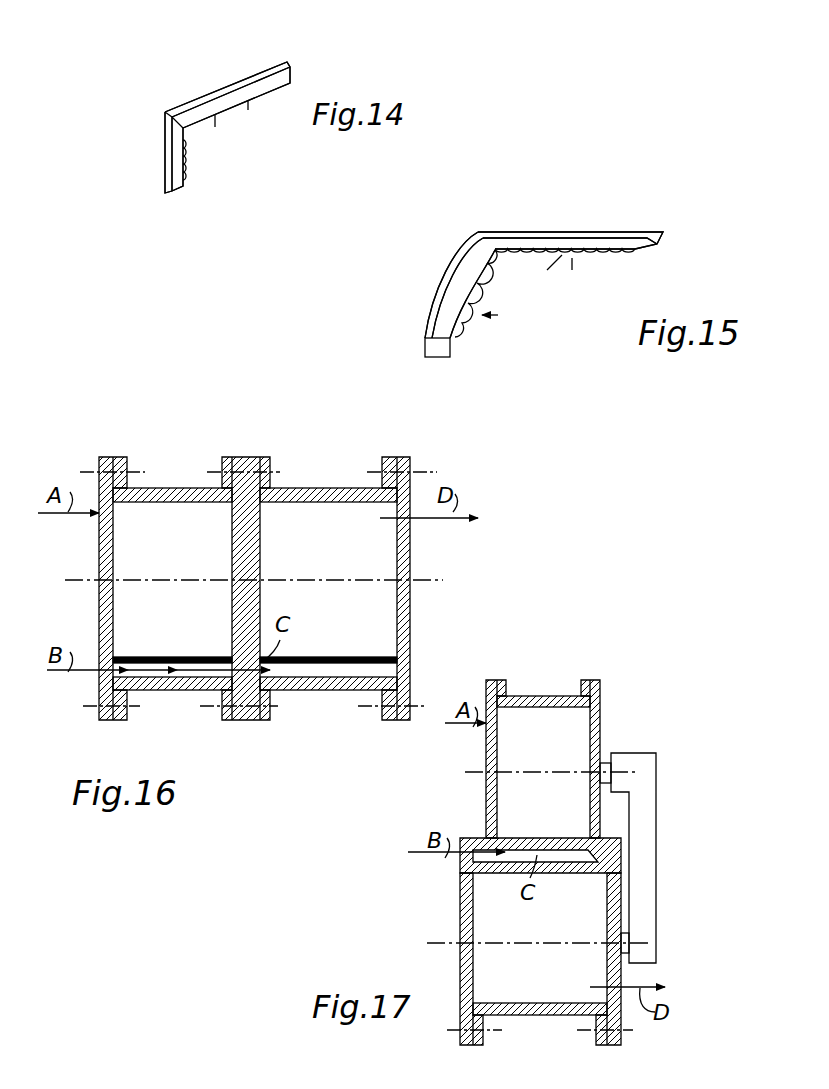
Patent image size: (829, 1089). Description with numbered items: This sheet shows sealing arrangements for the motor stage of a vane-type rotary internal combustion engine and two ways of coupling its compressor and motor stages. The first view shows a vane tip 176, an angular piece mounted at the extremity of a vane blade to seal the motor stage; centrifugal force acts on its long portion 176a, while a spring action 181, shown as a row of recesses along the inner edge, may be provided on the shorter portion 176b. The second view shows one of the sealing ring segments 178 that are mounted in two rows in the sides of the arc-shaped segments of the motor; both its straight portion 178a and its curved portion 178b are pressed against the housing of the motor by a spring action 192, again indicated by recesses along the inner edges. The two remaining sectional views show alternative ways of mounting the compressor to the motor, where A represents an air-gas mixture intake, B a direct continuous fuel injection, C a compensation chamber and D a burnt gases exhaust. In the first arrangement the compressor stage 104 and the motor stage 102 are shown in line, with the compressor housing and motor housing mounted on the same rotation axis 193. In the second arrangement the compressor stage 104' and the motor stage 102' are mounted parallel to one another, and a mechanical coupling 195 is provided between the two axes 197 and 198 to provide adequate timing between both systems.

In FIG. 14, the vane tip 176 is at (178, 87).
In FIG. 14, the portion of vane tip 176a is at (227, 95).
In FIG. 14, the portion of vane tip 176b is at (173, 158).
In FIG. 14, the spring action 181 is at (186, 177).
In FIG. 15, the sealing ring segment 178 is at (532, 180).
In FIG. 15, the portion of sealing ring segment 178a is at (568, 242).
In FIG. 15, the portion of sealing ring segment 178b is at (452, 298).
In FIG. 15, the spring action 192 is at (478, 293).
In FIG. 16, the compressor stage 104 is at (165, 578).
In FIG. 16, the motor stage 102 is at (335, 578).
In FIG. 16, the rotation axis 193 is at (433, 578).
In FIG. 17, the compressor stage 104' is at (579, 750).
In FIG. 17, the motor stage 102' is at (595, 941).
In FIG. 17, the mechanical coupling 195 is at (650, 857).
In FIG. 17, the axis 197 is at (468, 752).
In FIG. 17, the axis 198 is at (448, 920).